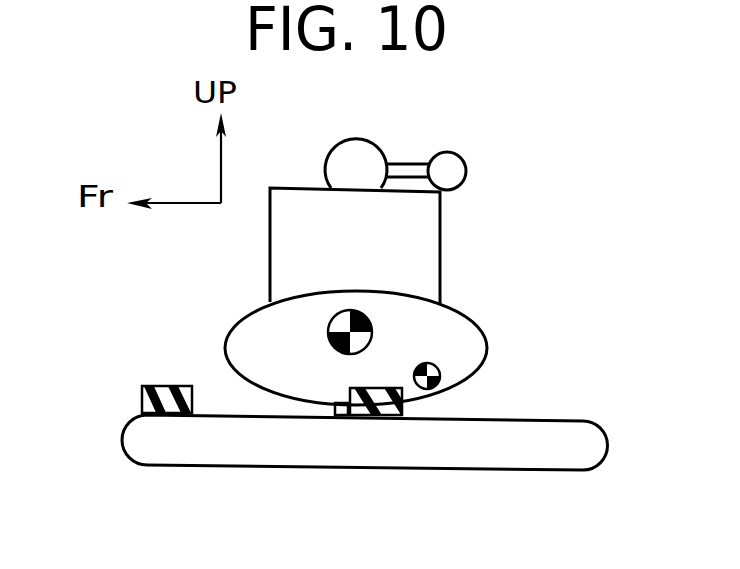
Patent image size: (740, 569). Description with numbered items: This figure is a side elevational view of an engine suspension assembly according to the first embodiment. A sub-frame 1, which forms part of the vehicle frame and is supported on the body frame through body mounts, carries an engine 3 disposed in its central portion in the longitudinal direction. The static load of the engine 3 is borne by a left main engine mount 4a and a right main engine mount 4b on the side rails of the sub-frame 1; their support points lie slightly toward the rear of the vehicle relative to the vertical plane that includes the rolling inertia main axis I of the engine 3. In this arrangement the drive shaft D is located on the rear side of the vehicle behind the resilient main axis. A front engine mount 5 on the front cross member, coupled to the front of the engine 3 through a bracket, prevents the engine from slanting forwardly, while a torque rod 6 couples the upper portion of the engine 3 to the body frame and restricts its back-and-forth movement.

The sub-frame 1 is at (220, 466).
The engine 3 is at (440, 222).
The left main engine mount 4a is at (396, 469).
The right main engine mount 4b is at (367, 415).
The front engine mount 5 is at (158, 386).
The torque rod 6 is at (407, 163).
The rolling inertia main axis I is at (326, 308).
The drive shaft D is at (436, 367).